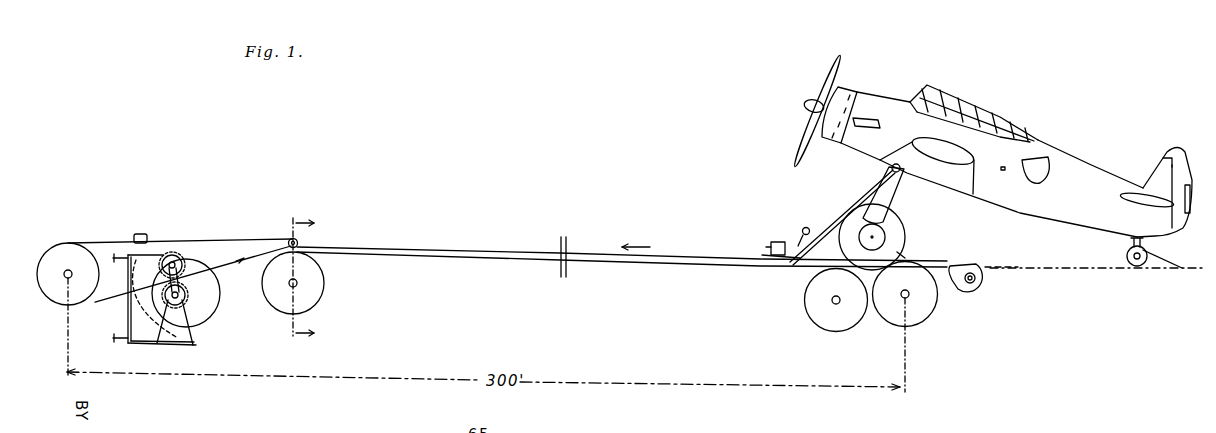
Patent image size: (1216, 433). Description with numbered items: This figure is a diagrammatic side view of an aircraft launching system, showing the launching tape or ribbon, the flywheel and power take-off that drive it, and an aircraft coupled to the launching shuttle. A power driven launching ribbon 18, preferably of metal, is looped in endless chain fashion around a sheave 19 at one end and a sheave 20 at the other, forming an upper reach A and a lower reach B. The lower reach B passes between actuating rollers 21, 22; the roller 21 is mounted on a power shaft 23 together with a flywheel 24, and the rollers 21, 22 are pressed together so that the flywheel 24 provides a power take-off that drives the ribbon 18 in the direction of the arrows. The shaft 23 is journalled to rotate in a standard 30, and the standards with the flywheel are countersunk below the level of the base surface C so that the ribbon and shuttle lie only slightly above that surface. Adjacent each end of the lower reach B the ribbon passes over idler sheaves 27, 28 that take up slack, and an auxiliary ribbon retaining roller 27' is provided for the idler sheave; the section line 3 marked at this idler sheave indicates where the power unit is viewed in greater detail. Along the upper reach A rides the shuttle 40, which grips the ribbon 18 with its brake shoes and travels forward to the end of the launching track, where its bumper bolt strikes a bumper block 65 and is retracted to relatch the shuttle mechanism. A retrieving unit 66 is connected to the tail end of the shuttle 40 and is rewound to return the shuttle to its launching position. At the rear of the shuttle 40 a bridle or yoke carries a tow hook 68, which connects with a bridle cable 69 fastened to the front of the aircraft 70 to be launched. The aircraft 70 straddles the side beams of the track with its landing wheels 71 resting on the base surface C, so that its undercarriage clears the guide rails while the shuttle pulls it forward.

The launching ribbon 18 is at (433, 250).
The sheave 19 is at (67, 246).
The sheave 20 is at (930, 303).
The actuating roller 21 is at (186, 292).
The actuating roller 22 is at (182, 256).
The power shaft 23 is at (168, 312).
The flywheel 24 is at (213, 316).
The idler sheave 27 is at (312, 283).
The auxiliary ribbon retaining roller 27' is at (336, 237).
The idler sheave 28 is at (815, 315).
The standard 30 is at (128, 316).
The shuttle 40 is at (772, 247).
The bumper block 65 is at (146, 236).
The retrieving unit 66 is at (985, 280).
The tow hook 68 is at (803, 230).
The bridle cable 69 is at (840, 205).
The aircraft 70 is at (887, 107).
The landing wheel 71 is at (893, 222).
The section line 3- 3 is at (310, 280).
The upper reach A is at (101, 242).
The lower reach B is at (96, 301).
The base surface C is at (895, 252).